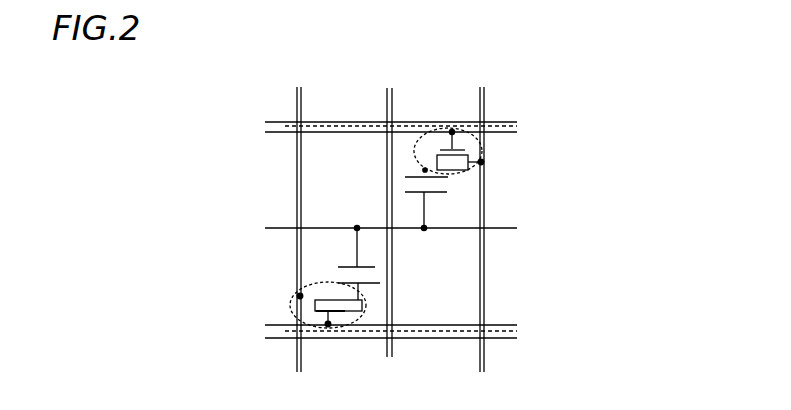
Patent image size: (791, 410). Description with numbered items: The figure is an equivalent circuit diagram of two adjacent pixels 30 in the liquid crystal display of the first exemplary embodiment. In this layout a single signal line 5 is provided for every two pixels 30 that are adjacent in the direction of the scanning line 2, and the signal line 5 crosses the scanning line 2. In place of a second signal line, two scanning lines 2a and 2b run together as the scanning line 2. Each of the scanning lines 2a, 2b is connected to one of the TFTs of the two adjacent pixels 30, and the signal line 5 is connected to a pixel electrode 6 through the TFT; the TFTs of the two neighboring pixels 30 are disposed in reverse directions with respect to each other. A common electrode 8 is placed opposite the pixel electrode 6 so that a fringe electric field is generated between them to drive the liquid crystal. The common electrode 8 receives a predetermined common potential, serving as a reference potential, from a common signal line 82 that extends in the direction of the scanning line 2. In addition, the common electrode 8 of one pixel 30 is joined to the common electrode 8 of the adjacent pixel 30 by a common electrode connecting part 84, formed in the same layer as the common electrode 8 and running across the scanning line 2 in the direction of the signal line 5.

The scanning line 2 is at (199, 92).
The scanning line 2a is at (272, 120).
The scanning line 2b is at (273, 133).
The signal line 5 is at (300, 90).
The pixel 30 is at (427, 121).
The pixel electrode 6 is at (425, 171).
The common electrode 8 is at (428, 203).
The common signal line 82 is at (270, 226).
The common electrode connecting part 84 is at (390, 355).
The thin film transistor TFT is at (484, 151).